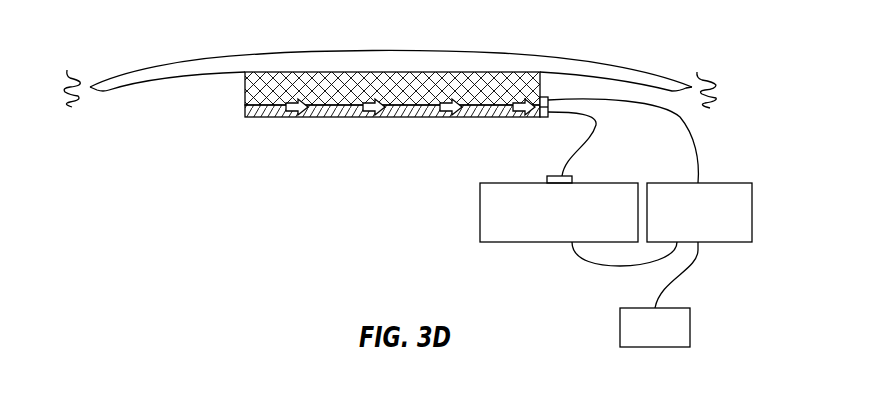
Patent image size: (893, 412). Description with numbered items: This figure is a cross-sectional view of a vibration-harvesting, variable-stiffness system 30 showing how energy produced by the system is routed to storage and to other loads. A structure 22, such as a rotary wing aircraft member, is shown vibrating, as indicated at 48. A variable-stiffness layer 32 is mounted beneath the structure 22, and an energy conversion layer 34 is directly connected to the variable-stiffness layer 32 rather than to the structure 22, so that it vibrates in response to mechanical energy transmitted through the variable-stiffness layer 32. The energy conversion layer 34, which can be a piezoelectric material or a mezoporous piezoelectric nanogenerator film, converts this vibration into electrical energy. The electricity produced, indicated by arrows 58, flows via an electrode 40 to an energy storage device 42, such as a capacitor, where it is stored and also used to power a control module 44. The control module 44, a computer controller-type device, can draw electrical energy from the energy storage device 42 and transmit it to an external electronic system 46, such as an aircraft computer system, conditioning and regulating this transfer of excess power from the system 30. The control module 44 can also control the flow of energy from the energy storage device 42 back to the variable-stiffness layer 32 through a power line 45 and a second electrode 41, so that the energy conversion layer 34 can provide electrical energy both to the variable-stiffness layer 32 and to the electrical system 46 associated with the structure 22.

The structure 22 is at (392, 60).
The vibration-harvesting, variable-stiffness system 30 is at (381, 186).
The variable-stiffness layer 32 is at (345, 80).
The energy conversion layer 34 is at (410, 113).
The electrode 40 is at (540, 117).
The second electrode 41 is at (546, 97).
The energy storage device 42 is at (480, 212).
The control module 44 is at (720, 183).
The power line 45 is at (683, 128).
The external electronic system 46 is at (642, 340).
The vibration of the structure 48 is at (380, 67).
The arrows indicating electricity flow 58 is at (293, 117).